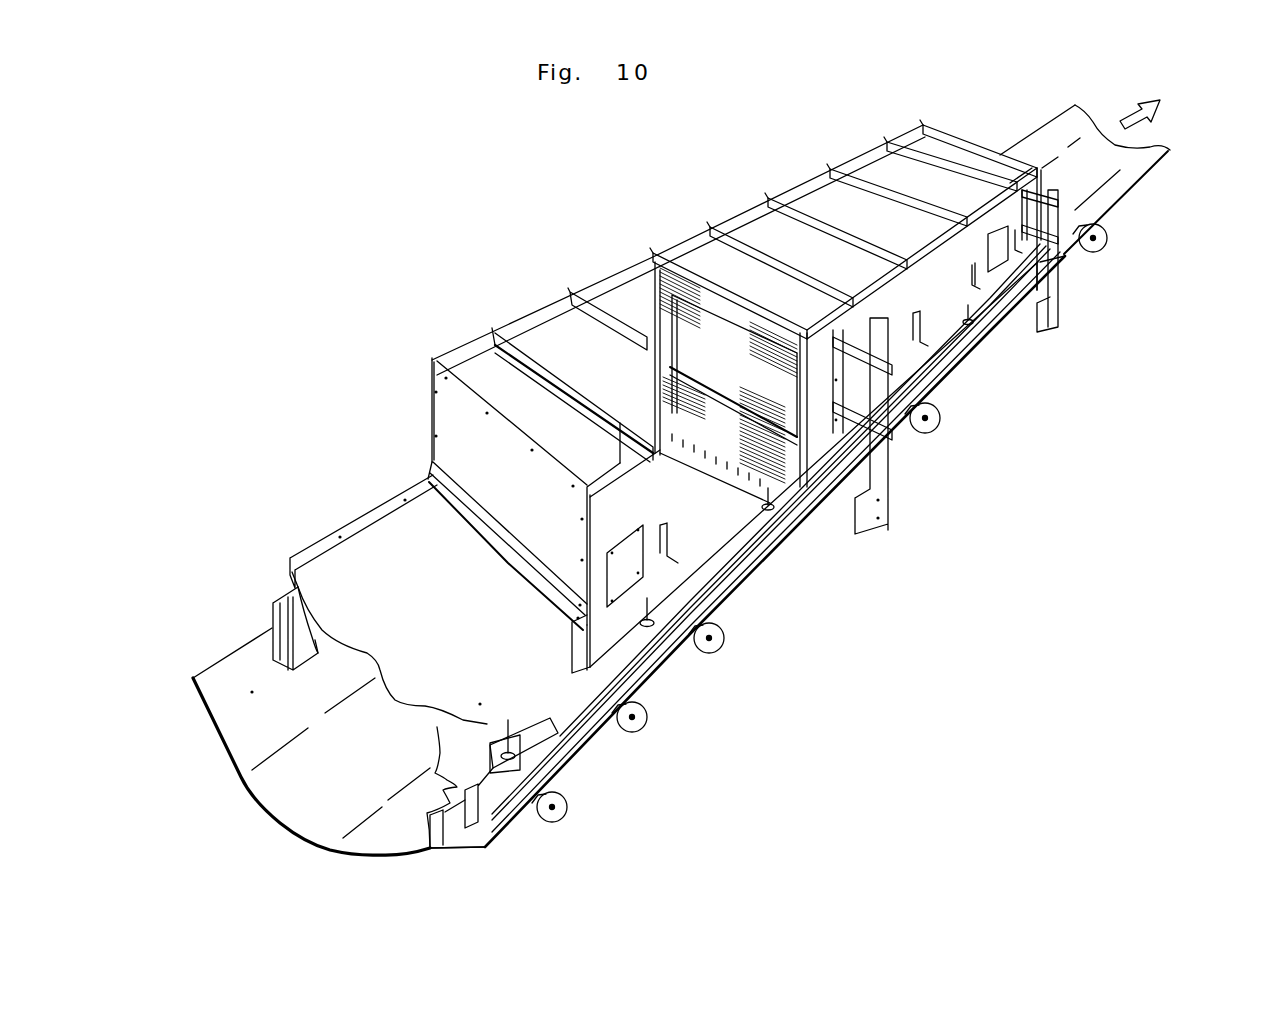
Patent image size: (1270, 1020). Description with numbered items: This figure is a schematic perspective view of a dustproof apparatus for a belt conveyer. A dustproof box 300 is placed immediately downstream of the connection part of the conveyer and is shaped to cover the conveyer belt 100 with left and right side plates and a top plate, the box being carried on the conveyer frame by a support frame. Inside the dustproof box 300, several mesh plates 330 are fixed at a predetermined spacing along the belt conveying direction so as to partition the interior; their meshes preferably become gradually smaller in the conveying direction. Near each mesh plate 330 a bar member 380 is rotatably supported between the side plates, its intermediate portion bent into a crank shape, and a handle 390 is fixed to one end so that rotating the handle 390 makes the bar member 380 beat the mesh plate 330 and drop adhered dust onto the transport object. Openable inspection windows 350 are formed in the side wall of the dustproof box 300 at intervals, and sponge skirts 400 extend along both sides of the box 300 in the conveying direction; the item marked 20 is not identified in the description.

The sheet 20 is at (240, 676).
The conveyer belt 100 is at (1130, 190).
The dustproof box 300 is at (766, 228).
The mesh plate 330 is at (698, 288).
The inspection window 350 is at (620, 590).
The bar member 380 is at (768, 503).
The handle 390 is at (680, 548).
The sponge skirt 400 is at (287, 604).